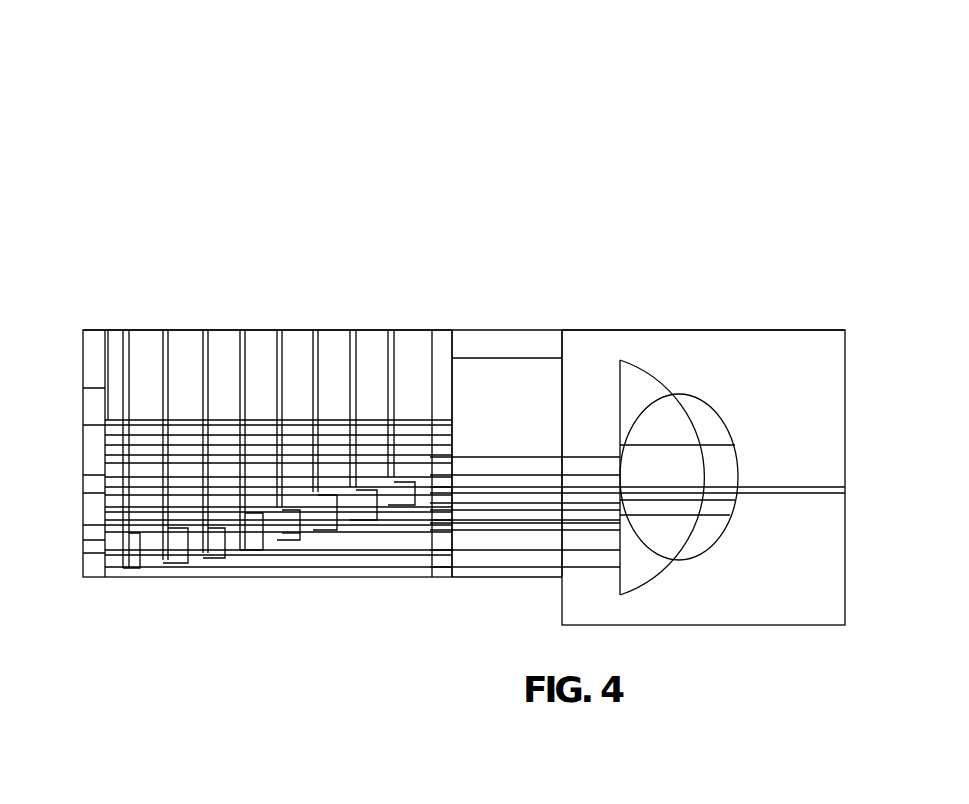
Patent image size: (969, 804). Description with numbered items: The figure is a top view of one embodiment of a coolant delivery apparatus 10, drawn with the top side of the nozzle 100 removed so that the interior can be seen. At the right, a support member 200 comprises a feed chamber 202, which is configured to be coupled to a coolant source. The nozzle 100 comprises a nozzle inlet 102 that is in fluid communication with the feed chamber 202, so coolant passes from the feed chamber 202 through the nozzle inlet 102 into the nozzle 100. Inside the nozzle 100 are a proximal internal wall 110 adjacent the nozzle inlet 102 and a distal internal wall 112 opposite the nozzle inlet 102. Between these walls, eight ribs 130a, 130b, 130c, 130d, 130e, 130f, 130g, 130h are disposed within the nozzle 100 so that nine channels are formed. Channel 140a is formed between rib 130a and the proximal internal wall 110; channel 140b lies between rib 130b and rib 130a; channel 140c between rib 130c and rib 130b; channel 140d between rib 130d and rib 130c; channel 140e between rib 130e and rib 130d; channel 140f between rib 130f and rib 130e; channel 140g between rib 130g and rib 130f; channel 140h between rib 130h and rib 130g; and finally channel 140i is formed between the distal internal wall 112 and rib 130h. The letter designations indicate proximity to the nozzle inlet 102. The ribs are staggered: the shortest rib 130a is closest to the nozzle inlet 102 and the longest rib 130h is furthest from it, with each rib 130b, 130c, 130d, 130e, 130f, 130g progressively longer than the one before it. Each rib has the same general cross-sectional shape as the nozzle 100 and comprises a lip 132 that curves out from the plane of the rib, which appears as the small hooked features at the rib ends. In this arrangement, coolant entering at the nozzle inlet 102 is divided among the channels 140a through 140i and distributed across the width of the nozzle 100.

The coolant delivery apparatus 10 is at (578, 118).
The nozzle 100 is at (321, 102).
The nozzle inlet 102 is at (485, 512).
The proximal internal wall 110 is at (430, 420).
The distal internal wall 112 is at (105, 333).
The support member 200 is at (693, 270).
The feed chamber 202 is at (762, 550).
The lip 132 is at (292, 538).
The channel 140a is at (410, 330).
The channel 140b is at (374, 330).
The channel 140c is at (335, 330).
The channel 140d is at (297, 330).
The channel 140e is at (255, 330).
The channel 140f is at (223, 330).
The channel 140g is at (183, 330).
The channel 140h is at (143, 330).
The channel 140i is at (116, 420).
The rib 130a is at (399, 530).
The rib 130b is at (358, 537).
The rib 130c is at (323, 555).
The rib 130d is at (290, 577).
The rib 130e is at (243, 577).
The rib 130f is at (212, 577).
The rib 130g is at (175, 577).
The rib 130h is at (132, 577).